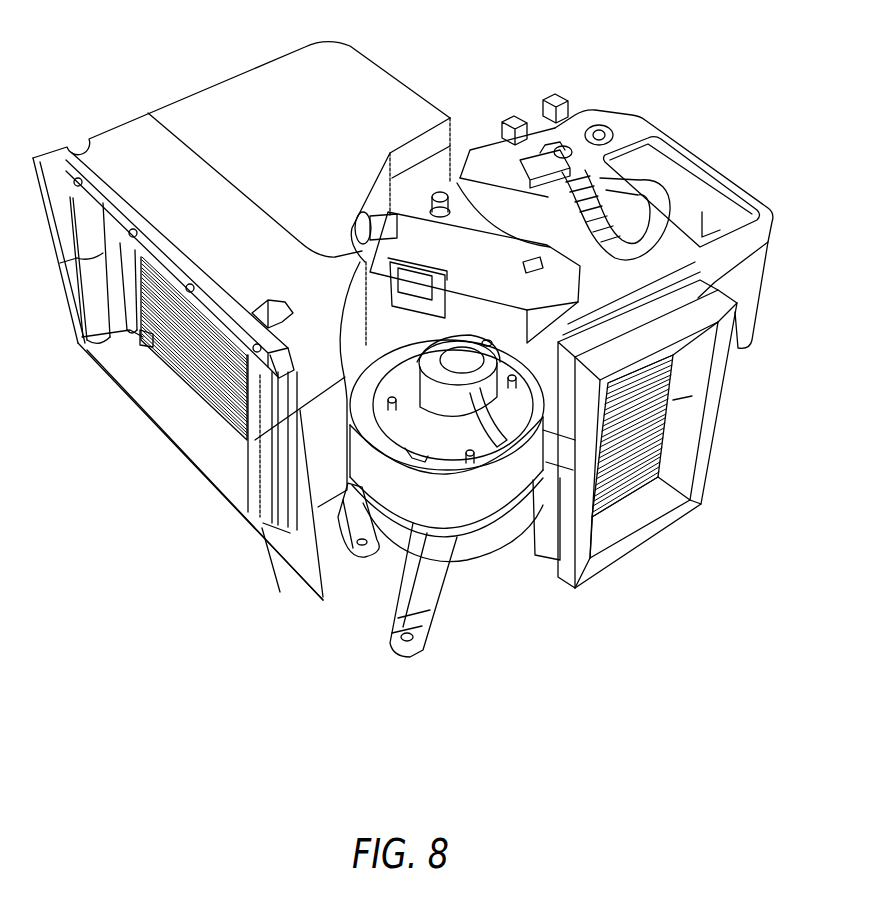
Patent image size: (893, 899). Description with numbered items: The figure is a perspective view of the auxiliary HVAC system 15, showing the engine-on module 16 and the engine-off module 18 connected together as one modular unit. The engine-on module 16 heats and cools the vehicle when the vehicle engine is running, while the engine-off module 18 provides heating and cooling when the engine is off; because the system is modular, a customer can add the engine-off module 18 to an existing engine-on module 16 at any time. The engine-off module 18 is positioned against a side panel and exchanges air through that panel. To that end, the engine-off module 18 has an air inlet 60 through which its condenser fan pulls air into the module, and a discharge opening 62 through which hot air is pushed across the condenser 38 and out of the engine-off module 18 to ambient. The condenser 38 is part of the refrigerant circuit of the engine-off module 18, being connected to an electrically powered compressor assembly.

The auxiliary HVAC system 15 is at (97, 72).
The engine-on module 16 is at (727, 150).
The engine-off module 18 is at (237, 62).
The condenser 38 is at (195, 372).
The air inlet 60 is at (286, 532).
The discharge opening 62 is at (144, 362).